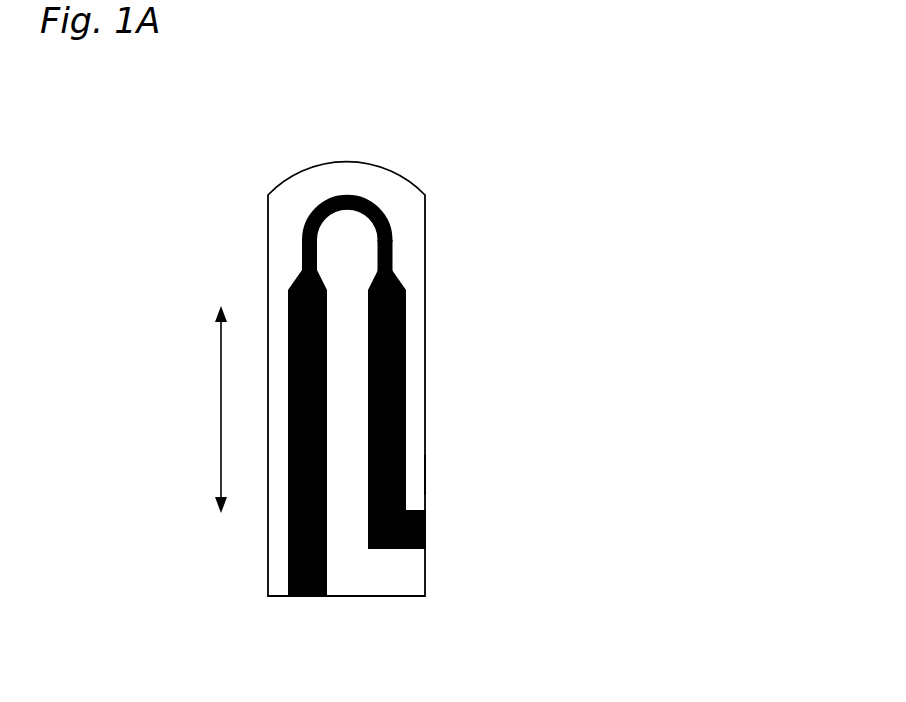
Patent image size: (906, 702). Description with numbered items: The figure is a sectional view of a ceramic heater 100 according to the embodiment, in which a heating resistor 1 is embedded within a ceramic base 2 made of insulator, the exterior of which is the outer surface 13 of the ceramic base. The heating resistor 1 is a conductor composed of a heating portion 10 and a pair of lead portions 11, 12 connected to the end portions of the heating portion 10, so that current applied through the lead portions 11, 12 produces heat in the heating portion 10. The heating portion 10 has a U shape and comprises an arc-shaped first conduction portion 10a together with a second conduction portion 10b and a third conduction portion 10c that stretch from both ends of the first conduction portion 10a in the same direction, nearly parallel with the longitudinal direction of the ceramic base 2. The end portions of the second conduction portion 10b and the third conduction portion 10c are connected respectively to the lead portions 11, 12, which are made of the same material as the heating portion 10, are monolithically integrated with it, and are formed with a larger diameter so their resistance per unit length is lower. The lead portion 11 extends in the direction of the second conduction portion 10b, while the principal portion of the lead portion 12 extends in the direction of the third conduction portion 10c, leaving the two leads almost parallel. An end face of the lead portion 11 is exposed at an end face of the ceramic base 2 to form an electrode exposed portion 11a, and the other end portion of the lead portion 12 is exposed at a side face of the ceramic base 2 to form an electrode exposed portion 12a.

The ceramic heater 100 is at (235, 96).
The heating resistor 1 is at (703, 113).
The ceramic base 2 is at (268, 200).
The heating portion 10 is at (550, 82).
The first conduction portion 10a is at (360, 188).
The second conduction portion 10b is at (310, 245).
The third conduction portion 10c is at (393, 246).
The lead portion 11 is at (327, 383).
The electrode exposed portion 11a is at (312, 596).
The lead portion 12 is at (406, 434).
The electrode exposed portion 12a is at (427, 535).
The outer surface of the ceramic base 13 is at (426, 475).